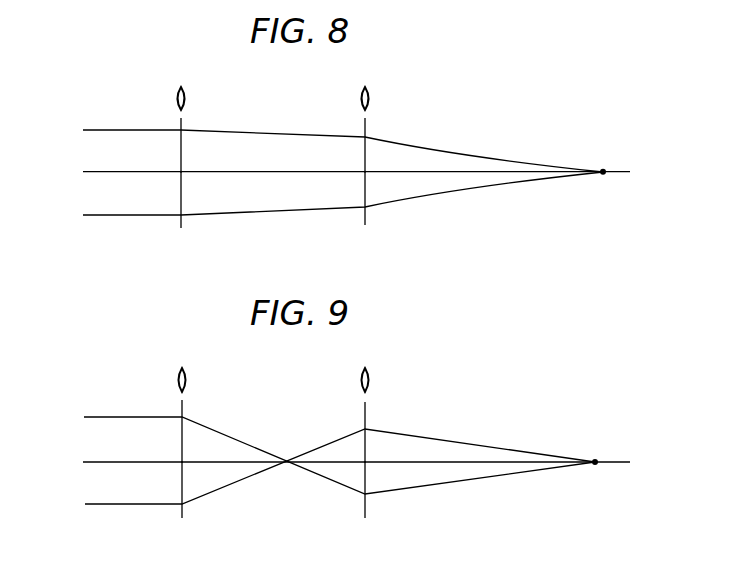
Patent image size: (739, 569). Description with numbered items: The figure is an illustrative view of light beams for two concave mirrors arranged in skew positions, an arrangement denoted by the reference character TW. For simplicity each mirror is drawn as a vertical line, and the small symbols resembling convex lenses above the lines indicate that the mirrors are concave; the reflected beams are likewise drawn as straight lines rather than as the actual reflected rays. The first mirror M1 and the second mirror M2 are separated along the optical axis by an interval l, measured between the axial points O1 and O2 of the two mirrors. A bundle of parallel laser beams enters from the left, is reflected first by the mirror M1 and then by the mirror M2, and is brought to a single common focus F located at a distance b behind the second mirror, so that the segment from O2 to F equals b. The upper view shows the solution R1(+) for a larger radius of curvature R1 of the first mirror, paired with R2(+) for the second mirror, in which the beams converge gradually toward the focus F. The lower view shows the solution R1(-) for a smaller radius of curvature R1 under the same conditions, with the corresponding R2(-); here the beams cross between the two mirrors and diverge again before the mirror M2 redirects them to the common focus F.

In FIG. 8, the first mirror M1 is at (181, 144).
In FIG. 9, the first mirror M1 is at (181, 429).
In FIG. 8, the second mirror M2 is at (365, 142).
In FIG. 9, the second mirror M2 is at (364, 429).
In FIG. 8, the radius of curvature of first mirror R1 is at (215, 101).
In FIG. 9, the radius of curvature of first mirror R1 is at (311, 388).
In FIG. 8, the radius of curvature of second mirror R2 is at (404, 101).
In FIG. 8, the vertex of first mirror O1 is at (165, 159).
In FIG. 9, the vertex of first mirror O1 is at (166, 450).
In FIG. 8, the vertex of second mirror O2 is at (349, 159).
In FIG. 9, the vertex of second mirror O2 is at (379, 450).
In FIG. 8, the skew arrangement TW is at (273, 84).
In FIG. 9, the skew arrangement TW is at (273, 366).
In FIG. 8, the mirror interval l is at (224, 159).
In FIG. 8, the focus distance b is at (497, 162).
In FIG. 8, the common focus F is at (602, 161).
In FIG. 9, the common focus F is at (593, 450).